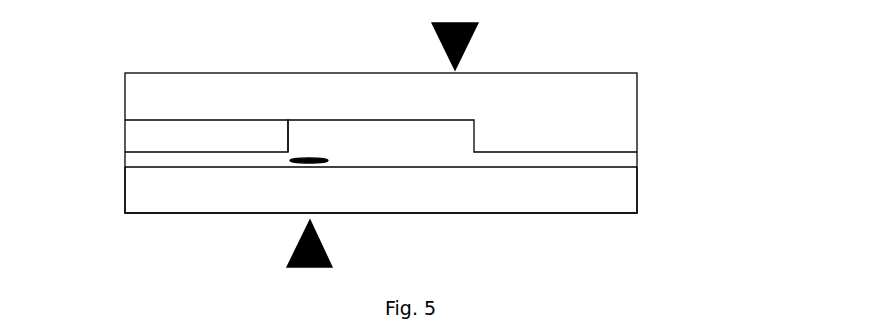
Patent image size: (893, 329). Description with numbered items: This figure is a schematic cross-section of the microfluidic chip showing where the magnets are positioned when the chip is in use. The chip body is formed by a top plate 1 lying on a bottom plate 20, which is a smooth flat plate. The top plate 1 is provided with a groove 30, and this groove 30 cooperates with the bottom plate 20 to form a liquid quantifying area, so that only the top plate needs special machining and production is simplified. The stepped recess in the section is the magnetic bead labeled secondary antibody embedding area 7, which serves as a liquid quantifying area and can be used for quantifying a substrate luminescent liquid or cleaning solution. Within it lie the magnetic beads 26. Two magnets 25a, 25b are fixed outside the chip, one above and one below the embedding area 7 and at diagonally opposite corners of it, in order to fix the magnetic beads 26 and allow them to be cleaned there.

The top plate 1 is at (623, 97).
The magnetic bead labeled secondary antibody embedding area 7 is at (492, 128).
The magnetic beads 26 is at (345, 160).
The bottom plate 20 is at (622, 198).
The groove 30 is at (302, 138).
The magnet 25a is at (495, 42).
The magnet 25b is at (338, 242).